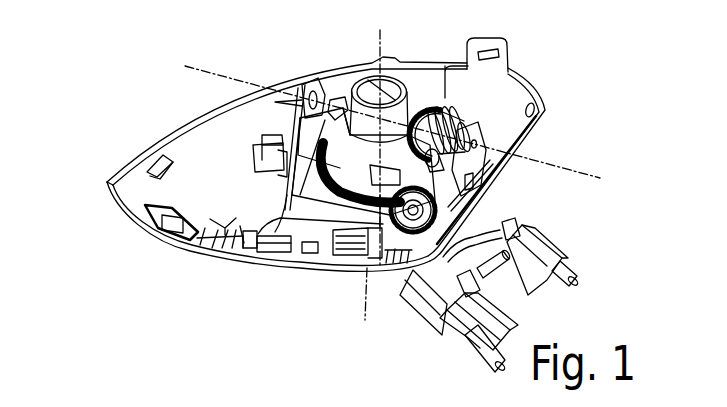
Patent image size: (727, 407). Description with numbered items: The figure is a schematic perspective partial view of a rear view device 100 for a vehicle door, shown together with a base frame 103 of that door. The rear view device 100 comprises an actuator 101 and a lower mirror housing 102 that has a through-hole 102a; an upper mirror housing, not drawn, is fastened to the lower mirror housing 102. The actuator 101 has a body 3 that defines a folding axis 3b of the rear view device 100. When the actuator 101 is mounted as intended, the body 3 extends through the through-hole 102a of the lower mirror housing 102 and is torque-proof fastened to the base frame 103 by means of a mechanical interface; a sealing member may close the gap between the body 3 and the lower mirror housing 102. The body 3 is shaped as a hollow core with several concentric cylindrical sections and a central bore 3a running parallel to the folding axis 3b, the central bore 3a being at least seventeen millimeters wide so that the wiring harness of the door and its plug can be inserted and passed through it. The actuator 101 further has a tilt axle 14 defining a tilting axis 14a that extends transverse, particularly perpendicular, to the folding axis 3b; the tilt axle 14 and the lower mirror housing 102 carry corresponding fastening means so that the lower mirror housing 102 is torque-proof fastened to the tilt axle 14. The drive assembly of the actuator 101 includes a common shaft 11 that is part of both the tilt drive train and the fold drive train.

The rear view device 100 is at (160, 111).
The actuator 101 is at (347, 71).
The lower mirror housing 102 is at (543, 122).
The through-hole 102a is at (315, 222).
The base frame 103 is at (543, 238).
The body 3 is at (357, 277).
The central bore 3a is at (391, 89).
The folding axis 3b is at (383, 58).
The common shaft 11 is at (385, 280).
The tilt axle 14 is at (463, 122).
The tilting axis 14a is at (592, 177).